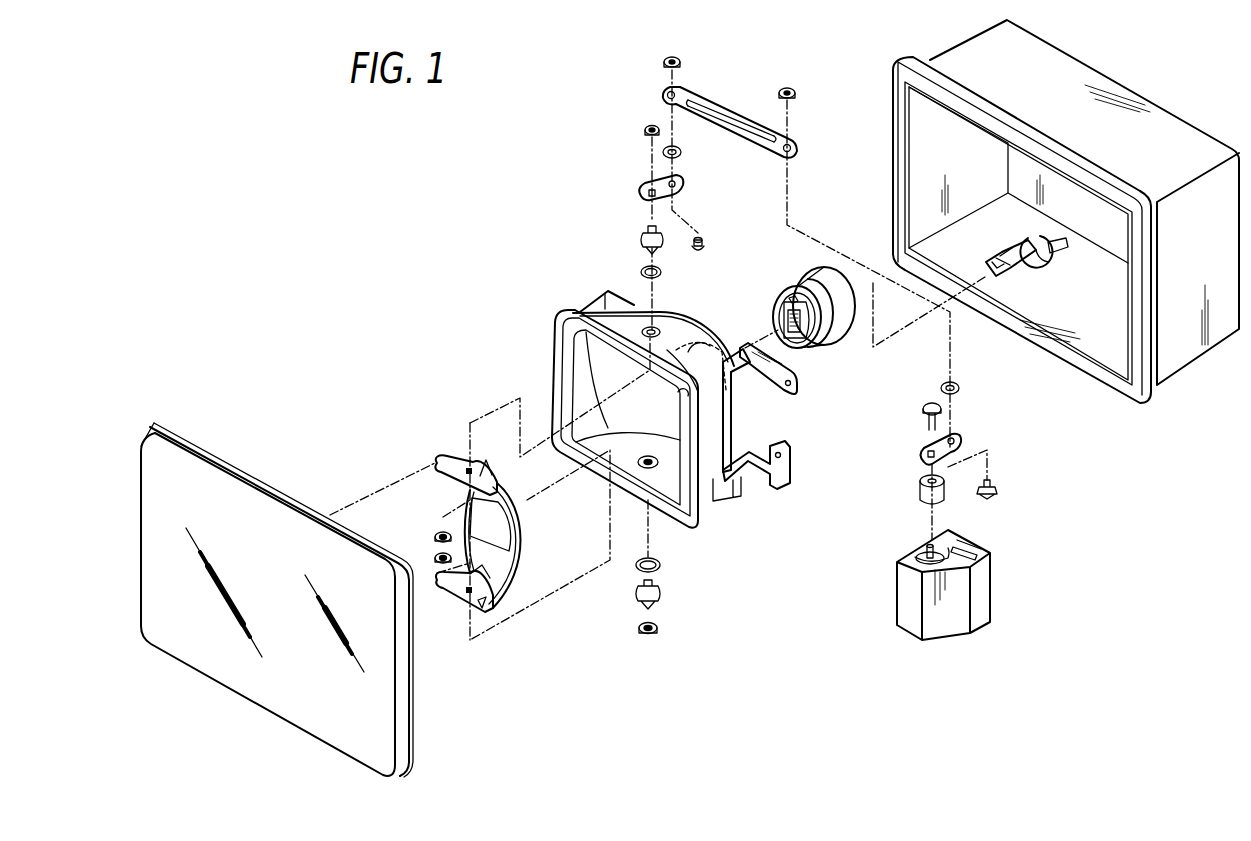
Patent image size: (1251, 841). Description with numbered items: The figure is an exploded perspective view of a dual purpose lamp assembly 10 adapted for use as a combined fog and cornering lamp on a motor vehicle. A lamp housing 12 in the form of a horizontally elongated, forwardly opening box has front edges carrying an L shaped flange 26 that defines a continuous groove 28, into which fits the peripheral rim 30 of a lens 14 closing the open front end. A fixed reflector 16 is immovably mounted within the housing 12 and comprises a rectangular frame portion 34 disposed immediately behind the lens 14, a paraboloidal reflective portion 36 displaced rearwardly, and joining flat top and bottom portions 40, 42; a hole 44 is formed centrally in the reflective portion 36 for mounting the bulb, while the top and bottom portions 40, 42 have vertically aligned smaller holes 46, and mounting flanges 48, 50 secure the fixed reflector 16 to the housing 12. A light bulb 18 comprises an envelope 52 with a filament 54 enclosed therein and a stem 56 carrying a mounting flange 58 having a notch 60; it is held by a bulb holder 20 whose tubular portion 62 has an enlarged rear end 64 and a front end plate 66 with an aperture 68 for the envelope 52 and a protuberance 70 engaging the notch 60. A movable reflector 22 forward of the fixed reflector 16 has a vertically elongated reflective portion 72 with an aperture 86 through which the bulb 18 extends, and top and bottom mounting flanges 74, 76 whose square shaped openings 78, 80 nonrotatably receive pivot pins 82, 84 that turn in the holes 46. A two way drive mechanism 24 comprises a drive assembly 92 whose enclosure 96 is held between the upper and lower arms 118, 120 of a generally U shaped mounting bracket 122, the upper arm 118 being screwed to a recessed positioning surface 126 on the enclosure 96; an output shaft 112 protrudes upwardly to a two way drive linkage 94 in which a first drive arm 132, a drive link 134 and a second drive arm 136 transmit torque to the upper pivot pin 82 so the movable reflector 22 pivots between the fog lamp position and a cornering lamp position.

The lamp assembly 10 is at (348, 316).
The lamp housing 12 is at (1039, 211).
The lens 14 is at (277, 593).
The fixed reflector 16 is at (660, 407).
The light bulb 18 is at (1022, 263).
The bulb holder 20 is at (817, 312).
The movable reflector 22 is at (471, 542).
The two way drive mechanism 24 is at (957, 511).
The L shaped flange 26 is at (905, 63).
The groove 28 is at (897, 103).
The peripheral rim 30 is at (273, 488).
The frame portion 34 is at (575, 311).
The reflective portion 36 is at (682, 306).
The flat top portion 40 is at (675, 335).
The flat bottom portion 42 is at (592, 449).
The hole 44 is at (679, 395).
The holes 46 is at (646, 328).
The mounting flange 48 is at (601, 297).
The mounting flange 50 is at (730, 504).
The envelope 52 is at (1003, 257).
The filament 54 is at (1003, 278).
The stem 56 is at (1053, 243).
The mounting flange 58 is at (1057, 260).
The notch 60 is at (1030, 224).
The tubular portion 62 is at (828, 342).
The enlarged rear end 64 is at (850, 334).
The end plate 66 is at (798, 344).
The aperture 68 is at (782, 307).
The protuberance 70 is at (804, 276).
The reflective portion 72 is at (504, 503).
The mounting flange 74 is at (453, 467).
The mounting flange 76 is at (474, 600).
The square shaped opening 78 is at (472, 470).
The square shaped opening 80 is at (463, 588).
The pivot pin 82 is at (640, 234).
The pivot pin 84 is at (662, 590).
The aperture 86 is at (514, 540).
The drive assembly 92 is at (941, 581).
The two way drive linkage 94 is at (806, 138).
The enclosure 96 is at (985, 577).
The output shaft 112 is at (928, 545).
The upper bracket arm 118 is at (750, 368).
The lower bracket arm 120 is at (780, 490).
The mounting bracket 122 is at (724, 427).
The recessed positioning surface 126 is at (1012, 502).
The first drive arm 132 is at (926, 451).
The drive link 134 is at (724, 104).
The second drive arm 136 is at (643, 188).